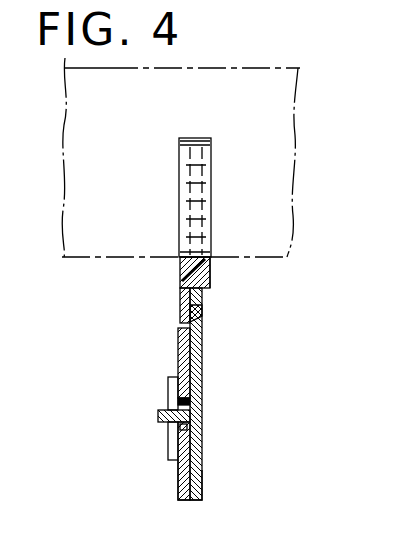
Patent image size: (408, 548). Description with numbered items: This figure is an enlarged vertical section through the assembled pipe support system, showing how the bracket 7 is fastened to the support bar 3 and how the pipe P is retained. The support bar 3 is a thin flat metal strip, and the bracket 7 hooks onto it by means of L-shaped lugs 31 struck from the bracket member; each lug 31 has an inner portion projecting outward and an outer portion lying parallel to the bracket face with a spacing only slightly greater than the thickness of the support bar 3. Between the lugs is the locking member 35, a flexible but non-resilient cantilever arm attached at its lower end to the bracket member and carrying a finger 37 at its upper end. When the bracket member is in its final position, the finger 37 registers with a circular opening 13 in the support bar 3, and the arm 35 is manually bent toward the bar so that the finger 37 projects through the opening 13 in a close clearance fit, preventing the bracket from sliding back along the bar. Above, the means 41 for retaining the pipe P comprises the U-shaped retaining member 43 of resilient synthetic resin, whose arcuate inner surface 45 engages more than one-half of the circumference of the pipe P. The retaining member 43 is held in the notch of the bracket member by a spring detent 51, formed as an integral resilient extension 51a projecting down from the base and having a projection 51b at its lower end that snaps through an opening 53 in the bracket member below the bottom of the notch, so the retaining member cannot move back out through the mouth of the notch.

The pipe P is at (190, 68).
The arcuate inner surface 45 is at (208, 213).
The retaining member 43 is at (211, 280).
The means for retaining the pipe 41 is at (222, 268).
The spring detent 51 is at (202, 362).
The resilient extension 51a is at (180, 292).
The projection 51b is at (203, 308).
The opening 53 is at (202, 325).
The L-shaped lug 31 is at (168, 390).
The finger 37 is at (158, 416).
The circular opening 13 is at (182, 430).
The locking member 35 is at (203, 462).
The bracket 7 is at (212, 483).
The support bar 3 is at (168, 480).